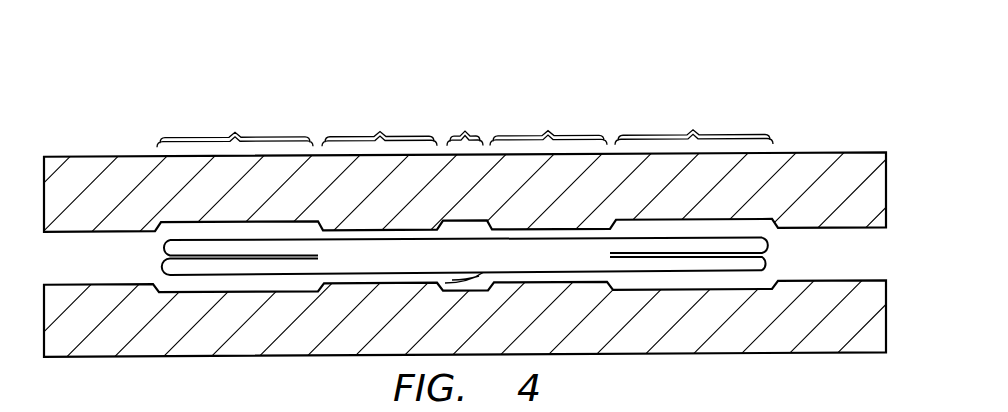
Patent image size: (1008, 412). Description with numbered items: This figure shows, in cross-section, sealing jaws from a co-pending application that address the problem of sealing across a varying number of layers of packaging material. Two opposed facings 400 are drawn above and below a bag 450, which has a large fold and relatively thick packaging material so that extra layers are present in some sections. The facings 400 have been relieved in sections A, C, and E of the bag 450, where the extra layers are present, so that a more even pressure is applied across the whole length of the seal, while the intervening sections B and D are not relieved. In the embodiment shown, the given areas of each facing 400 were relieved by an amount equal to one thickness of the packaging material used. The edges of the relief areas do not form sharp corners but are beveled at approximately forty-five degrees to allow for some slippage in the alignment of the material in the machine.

The facings 400 is at (813, 157).
The bag 450 is at (159, 246).
The section A is at (235, 127).
The section B is at (379, 127).
The section C is at (465, 126).
The section D is at (548, 126).
The section E is at (694, 125).